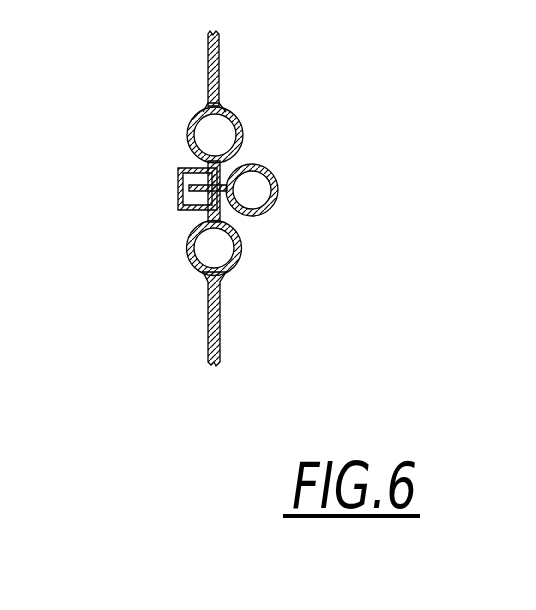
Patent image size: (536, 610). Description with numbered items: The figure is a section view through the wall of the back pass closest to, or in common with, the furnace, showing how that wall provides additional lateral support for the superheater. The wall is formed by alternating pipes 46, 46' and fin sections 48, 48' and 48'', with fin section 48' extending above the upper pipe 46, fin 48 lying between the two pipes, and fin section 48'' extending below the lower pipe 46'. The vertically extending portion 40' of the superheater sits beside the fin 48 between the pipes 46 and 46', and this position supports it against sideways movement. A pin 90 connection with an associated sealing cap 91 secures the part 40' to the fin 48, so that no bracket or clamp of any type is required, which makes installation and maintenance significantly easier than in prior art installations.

The fin section 48' is at (293, 67).
The pipe 46 is at (155, 124).
The sealing cap 91 is at (178, 178).
The pin 90 is at (178, 188).
The vertically extending portion of the superheater 40' is at (307, 179).
The pipe 46' is at (154, 247).
The fin 48 is at (293, 215).
The fin section 48'' is at (297, 319).